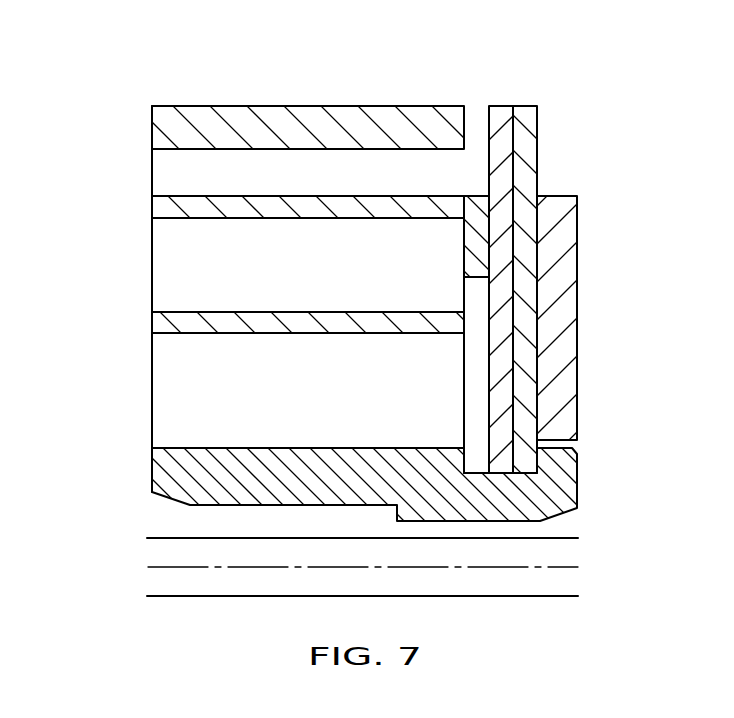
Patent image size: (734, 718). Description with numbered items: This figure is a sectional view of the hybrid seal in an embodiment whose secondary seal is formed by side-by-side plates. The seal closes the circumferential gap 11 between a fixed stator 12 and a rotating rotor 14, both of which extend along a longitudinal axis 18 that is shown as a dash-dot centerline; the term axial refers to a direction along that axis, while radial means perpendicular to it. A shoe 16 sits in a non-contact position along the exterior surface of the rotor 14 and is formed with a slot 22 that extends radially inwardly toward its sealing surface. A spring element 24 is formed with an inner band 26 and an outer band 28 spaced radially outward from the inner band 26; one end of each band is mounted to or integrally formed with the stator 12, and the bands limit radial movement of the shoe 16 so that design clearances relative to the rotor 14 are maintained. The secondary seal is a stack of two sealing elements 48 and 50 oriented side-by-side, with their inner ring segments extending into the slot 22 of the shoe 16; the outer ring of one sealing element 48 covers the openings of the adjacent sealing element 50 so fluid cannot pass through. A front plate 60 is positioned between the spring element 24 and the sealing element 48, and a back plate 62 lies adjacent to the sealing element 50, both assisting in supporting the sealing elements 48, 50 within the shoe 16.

The spring element 24 is at (88, 105).
The stator 12 is at (380, 106).
The outer band 28 is at (154, 210).
The inner band 26 is at (154, 319).
The front plate 60 is at (486, 196).
The sealing element 48 is at (502, 106).
The sealing element 50 is at (538, 153).
The back plate 62 is at (578, 302).
The shoe 16 is at (152, 473).
The slot 22 is at (468, 458).
The circumferential gap 11 is at (545, 530).
The longitudinal axis 18 is at (160, 567).
The rotor 14 is at (538, 597).